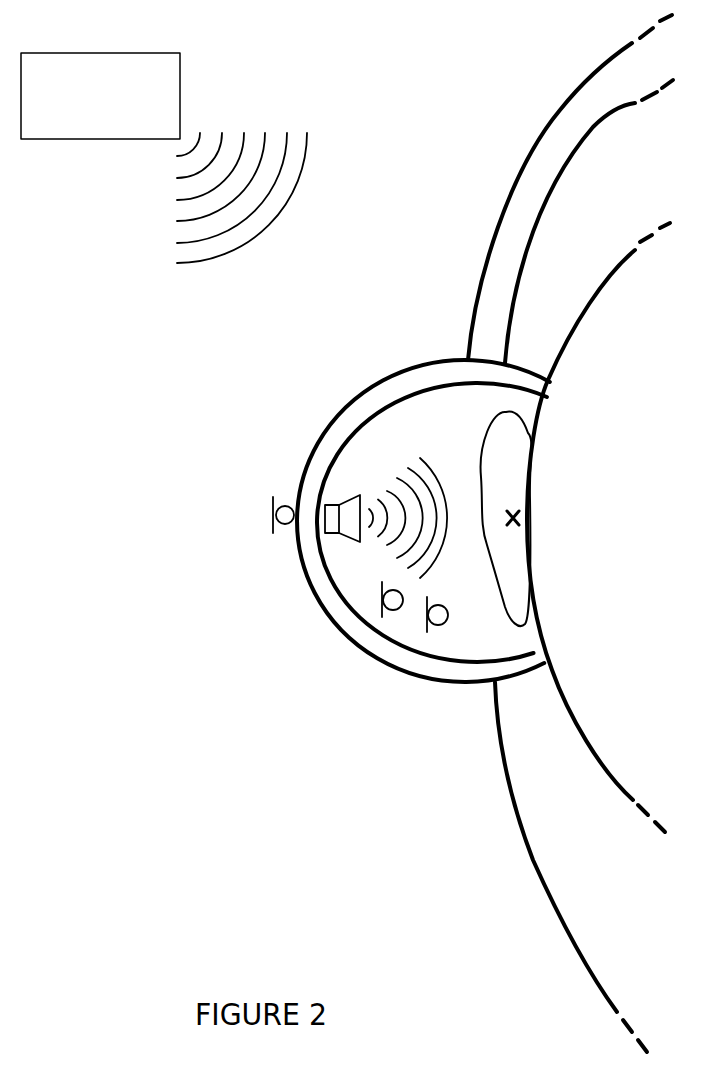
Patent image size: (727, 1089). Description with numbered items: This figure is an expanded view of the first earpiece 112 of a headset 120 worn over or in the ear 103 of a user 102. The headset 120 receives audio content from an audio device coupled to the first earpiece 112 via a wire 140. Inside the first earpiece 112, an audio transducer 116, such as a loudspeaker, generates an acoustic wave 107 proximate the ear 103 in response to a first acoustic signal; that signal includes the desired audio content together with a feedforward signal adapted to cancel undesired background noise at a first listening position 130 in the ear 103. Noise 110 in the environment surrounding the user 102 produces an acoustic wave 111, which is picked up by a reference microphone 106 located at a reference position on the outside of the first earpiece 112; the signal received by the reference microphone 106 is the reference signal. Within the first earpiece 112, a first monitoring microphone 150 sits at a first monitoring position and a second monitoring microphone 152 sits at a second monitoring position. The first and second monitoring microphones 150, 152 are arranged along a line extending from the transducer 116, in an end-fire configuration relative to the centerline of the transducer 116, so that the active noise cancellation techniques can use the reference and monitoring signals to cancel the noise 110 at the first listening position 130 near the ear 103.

The user 102 is at (645, 442).
The ear 103 is at (522, 627).
The reference microphone 106 is at (282, 524).
The acoustic wave 107 is at (383, 550).
The noise 110 is at (100, 96).
The acoustic wave 111 is at (172, 188).
The first earpiece 112 is at (402, 367).
The audio transducer 116 is at (338, 503).
The headset 120 is at (523, 154).
The first listening position 130 is at (512, 528).
The wire 140 is at (534, 859).
The first monitoring microphone 150 is at (388, 611).
The second monitoring microphone 152 is at (433, 626).